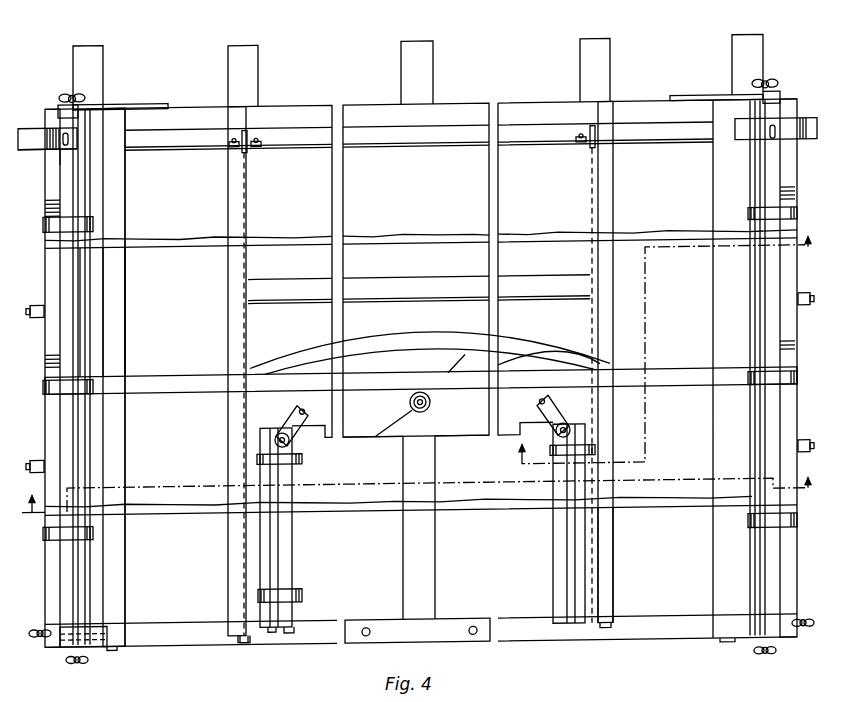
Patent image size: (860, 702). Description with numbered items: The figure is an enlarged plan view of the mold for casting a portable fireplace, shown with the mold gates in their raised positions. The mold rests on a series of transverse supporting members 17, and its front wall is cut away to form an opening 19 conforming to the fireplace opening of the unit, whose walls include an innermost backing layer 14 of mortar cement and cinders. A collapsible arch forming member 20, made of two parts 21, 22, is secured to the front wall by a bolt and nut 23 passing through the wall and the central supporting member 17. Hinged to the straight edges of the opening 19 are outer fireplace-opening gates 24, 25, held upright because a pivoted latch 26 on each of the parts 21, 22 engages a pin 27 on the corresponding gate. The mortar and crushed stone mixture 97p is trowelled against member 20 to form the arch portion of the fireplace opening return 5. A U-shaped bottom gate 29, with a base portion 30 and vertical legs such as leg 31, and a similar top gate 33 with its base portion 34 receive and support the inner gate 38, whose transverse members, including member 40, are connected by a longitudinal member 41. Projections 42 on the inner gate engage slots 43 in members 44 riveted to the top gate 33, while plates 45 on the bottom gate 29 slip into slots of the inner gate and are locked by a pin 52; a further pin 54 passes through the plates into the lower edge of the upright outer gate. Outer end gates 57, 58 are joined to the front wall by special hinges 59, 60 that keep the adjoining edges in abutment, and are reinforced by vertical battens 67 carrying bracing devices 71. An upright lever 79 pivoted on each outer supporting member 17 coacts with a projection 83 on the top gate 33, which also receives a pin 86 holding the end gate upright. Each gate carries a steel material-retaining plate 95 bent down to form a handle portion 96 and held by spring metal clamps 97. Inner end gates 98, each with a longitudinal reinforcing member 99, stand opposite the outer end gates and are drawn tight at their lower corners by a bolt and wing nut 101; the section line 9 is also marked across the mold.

The fireplace opening return 5 is at (417, 505).
The section line 9- 9 is at (658, 354).
The backing layer 14 is at (740, 312).
The transverse supporting members 17 is at (73, 63).
The opening 19 is at (506, 525).
The arch forming member 20 is at (411, 365).
The part of arch forming member 21 is at (360, 437).
The part of arch forming member 22 is at (462, 437).
The bolt and nut 23 is at (431, 403).
The outer fireplace-opening gate 24 is at (292, 516).
The outer fireplace-opening gate 25 is at (553, 573).
The pivoted latch 26 is at (288, 446).
The pin 27 is at (275, 430).
The bottom gate 29 is at (197, 630).
The base portion 30 is at (350, 630).
The vertical leg 31 is at (88, 650).
The top gate 33 is at (372, 143).
The base portion 34 is at (455, 126).
The inner gate 38 is at (415, 277).
The transverse member 40 is at (613, 210).
The longitudinal member 41 is at (530, 277).
The projections 42 is at (246, 128).
The slots 43 is at (233, 139).
The members 44 is at (257, 146).
The plates 45 is at (600, 630).
The pin 52 is at (243, 640).
The pin 54 is at (290, 640).
The outer end gate 57 is at (70, 585).
The outer end gate 58 is at (775, 577).
The hinge 59 is at (115, 632).
The hinge 60 is at (85, 100).
The battens 67 is at (48, 325).
The bracing devices 71 is at (33, 299).
The upright lever 79 is at (40, 124).
The projection 83 is at (55, 148).
The pin 86 is at (68, 140).
The material-retaining plate 95 is at (92, 450).
The handle portion 96 is at (85, 410).
The spring metal clamps 97 is at (300, 594).
The mortar cement and crushed stone mixture 97p is at (525, 350).
The inner end gate 98 is at (125, 203).
The longitudinal reinforcing member 99 is at (125, 268).
The bolt and wing nut 101 is at (38, 640).